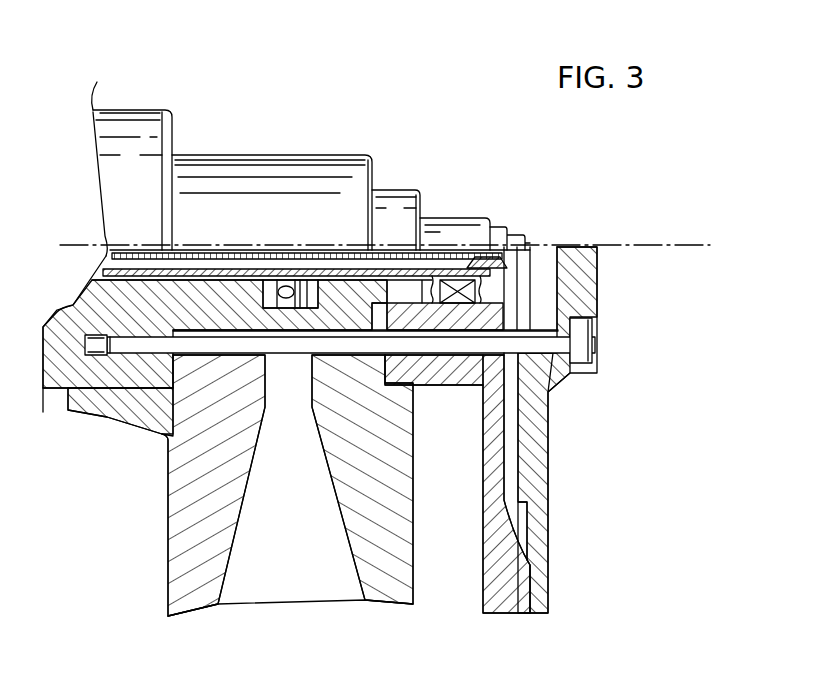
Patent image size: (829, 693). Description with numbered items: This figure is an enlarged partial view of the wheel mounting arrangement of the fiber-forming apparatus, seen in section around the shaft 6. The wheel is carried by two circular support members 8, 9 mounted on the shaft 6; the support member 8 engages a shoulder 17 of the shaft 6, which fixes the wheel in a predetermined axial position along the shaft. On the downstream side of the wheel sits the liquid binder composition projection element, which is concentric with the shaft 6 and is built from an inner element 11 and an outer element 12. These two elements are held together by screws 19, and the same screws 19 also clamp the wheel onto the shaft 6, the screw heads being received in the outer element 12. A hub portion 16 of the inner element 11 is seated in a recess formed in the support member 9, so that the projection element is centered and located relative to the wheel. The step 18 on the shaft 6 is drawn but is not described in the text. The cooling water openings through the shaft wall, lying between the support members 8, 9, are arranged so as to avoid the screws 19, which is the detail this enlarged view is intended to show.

The shaft 6 is at (128, 128).
The rotor step 18 is at (404, 192).
The hub portion 16 is at (452, 374).
The screws 19 is at (550, 343).
The inner element 11 is at (490, 468).
The outer element 12 is at (538, 465).
The support member 8 is at (183, 530).
The support member 9 is at (400, 554).
The shoulder 17 is at (115, 390).